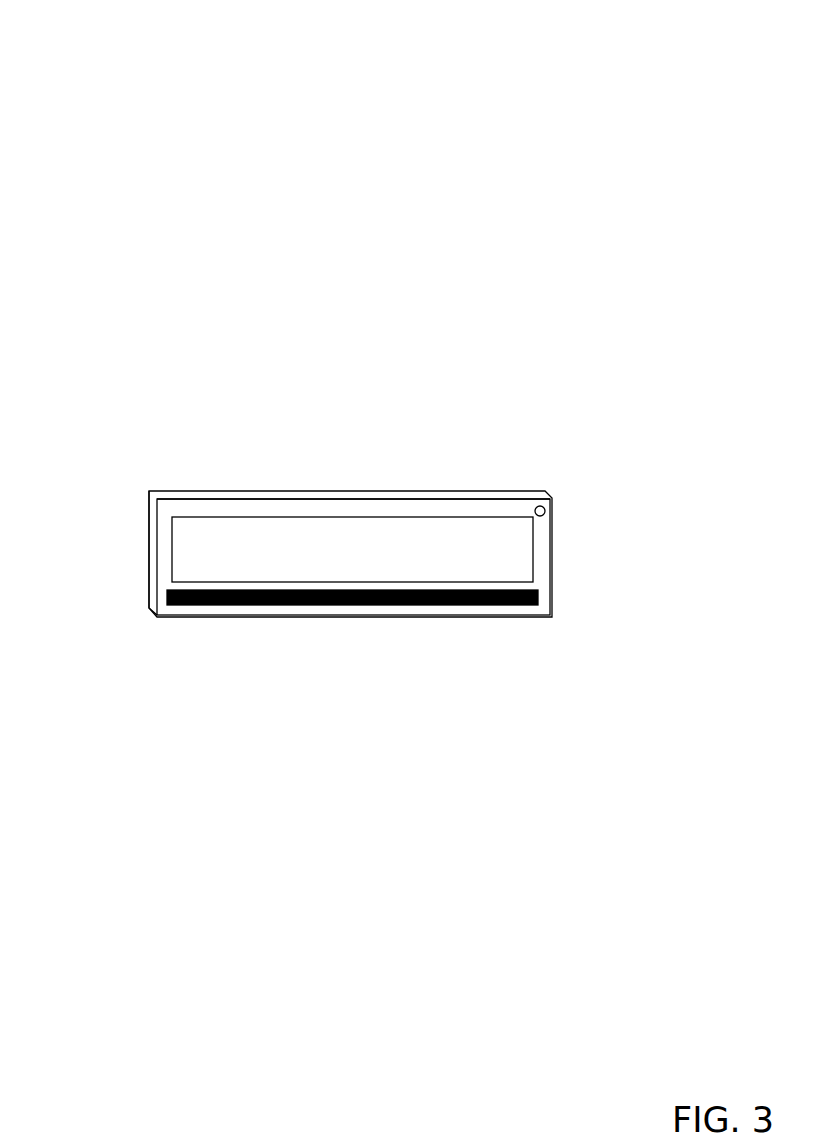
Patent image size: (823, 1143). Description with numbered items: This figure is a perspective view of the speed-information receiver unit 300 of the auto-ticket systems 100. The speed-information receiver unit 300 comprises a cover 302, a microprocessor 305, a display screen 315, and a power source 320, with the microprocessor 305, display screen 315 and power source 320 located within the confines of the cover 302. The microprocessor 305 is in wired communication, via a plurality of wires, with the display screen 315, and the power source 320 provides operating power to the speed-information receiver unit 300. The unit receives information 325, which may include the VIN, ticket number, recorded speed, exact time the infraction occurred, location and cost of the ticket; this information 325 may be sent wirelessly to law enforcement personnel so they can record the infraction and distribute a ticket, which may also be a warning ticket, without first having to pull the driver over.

The auto-ticket systems 100 is at (570, 77).
The speed-information receiver unit 300 is at (263, 484).
The cover 302 is at (138, 558).
The microprocessor 305 is at (537, 489).
The display screen 315 is at (550, 557).
The power source 320 is at (334, 495).
The information 325 is at (195, 525).